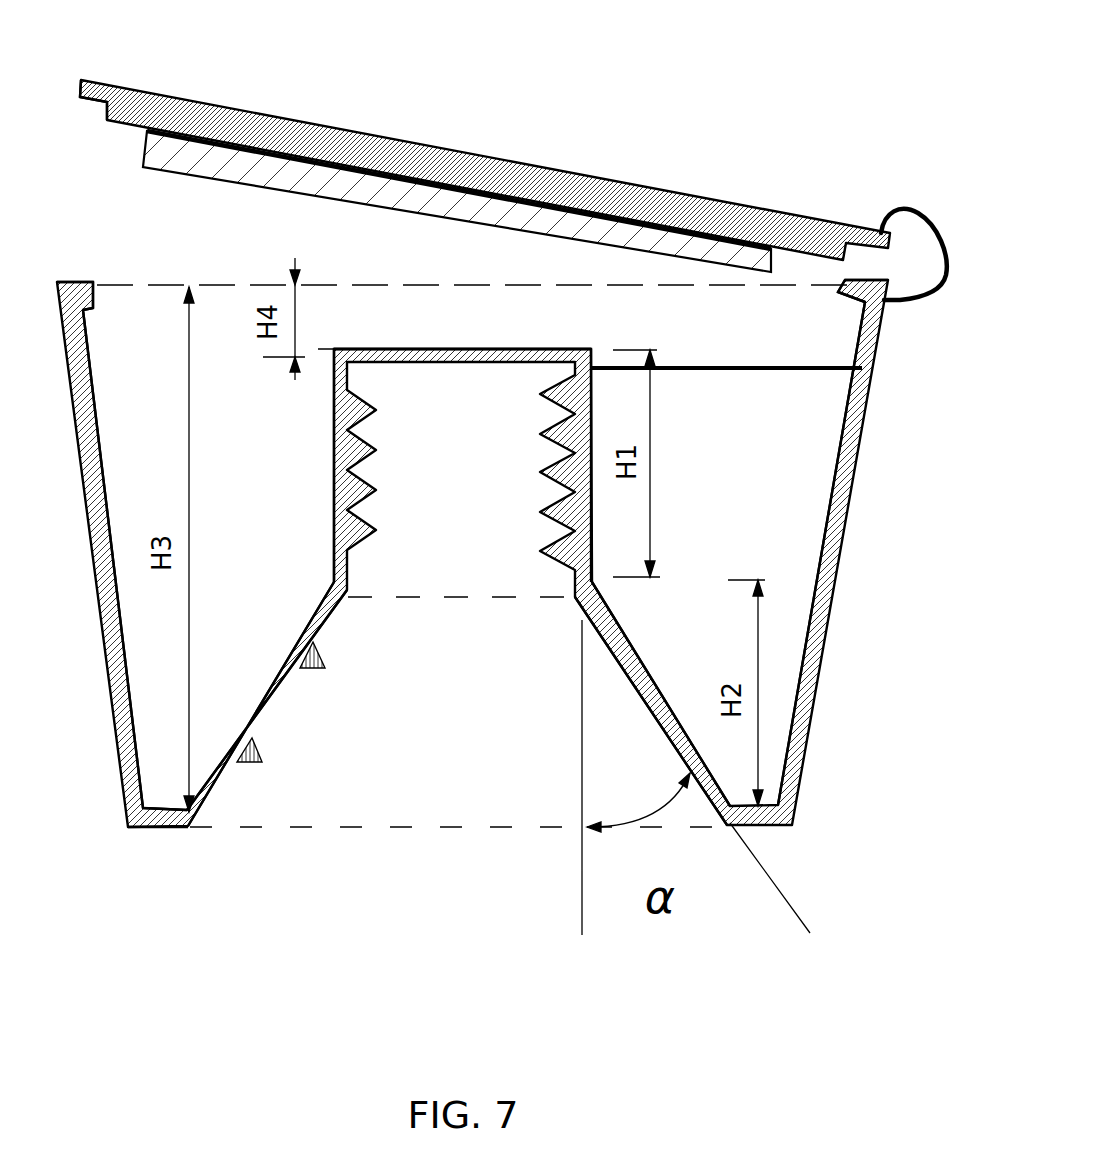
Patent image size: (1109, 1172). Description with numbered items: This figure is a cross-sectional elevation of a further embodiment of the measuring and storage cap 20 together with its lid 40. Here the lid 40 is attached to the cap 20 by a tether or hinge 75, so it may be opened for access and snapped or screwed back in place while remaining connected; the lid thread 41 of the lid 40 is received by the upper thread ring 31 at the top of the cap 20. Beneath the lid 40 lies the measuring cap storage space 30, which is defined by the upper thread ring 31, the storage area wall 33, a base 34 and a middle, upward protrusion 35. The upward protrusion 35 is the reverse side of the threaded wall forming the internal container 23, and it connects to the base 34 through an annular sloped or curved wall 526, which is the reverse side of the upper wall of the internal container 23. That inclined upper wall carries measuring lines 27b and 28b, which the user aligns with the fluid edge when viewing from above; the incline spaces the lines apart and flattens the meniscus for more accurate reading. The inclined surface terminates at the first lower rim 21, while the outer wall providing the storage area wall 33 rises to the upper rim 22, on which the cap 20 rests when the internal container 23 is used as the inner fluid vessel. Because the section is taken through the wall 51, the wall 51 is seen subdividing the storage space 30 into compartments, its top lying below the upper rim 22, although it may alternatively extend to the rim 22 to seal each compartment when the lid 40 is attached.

The cap 20 is at (472, 835).
The first lower rim 21 is at (125, 847).
The upper rim 22 is at (98, 278).
The internal container 23 is at (445, 715).
The measuring line 27b is at (337, 667).
The measuring line 28b is at (277, 748).
The measuring cap storage space 30 is at (225, 480).
The upper thread ring 31 is at (838, 308).
The storage area wall 33 is at (130, 415).
The base 34 is at (733, 785).
The upward protrusion 35 is at (473, 356).
The lid 40 is at (605, 190).
The lid thread 41 is at (82, 113).
The wall 51 is at (705, 467).
The tether or hinge 75 is at (323, 190).
The annular sloped or curved wall 526 is at (298, 652).